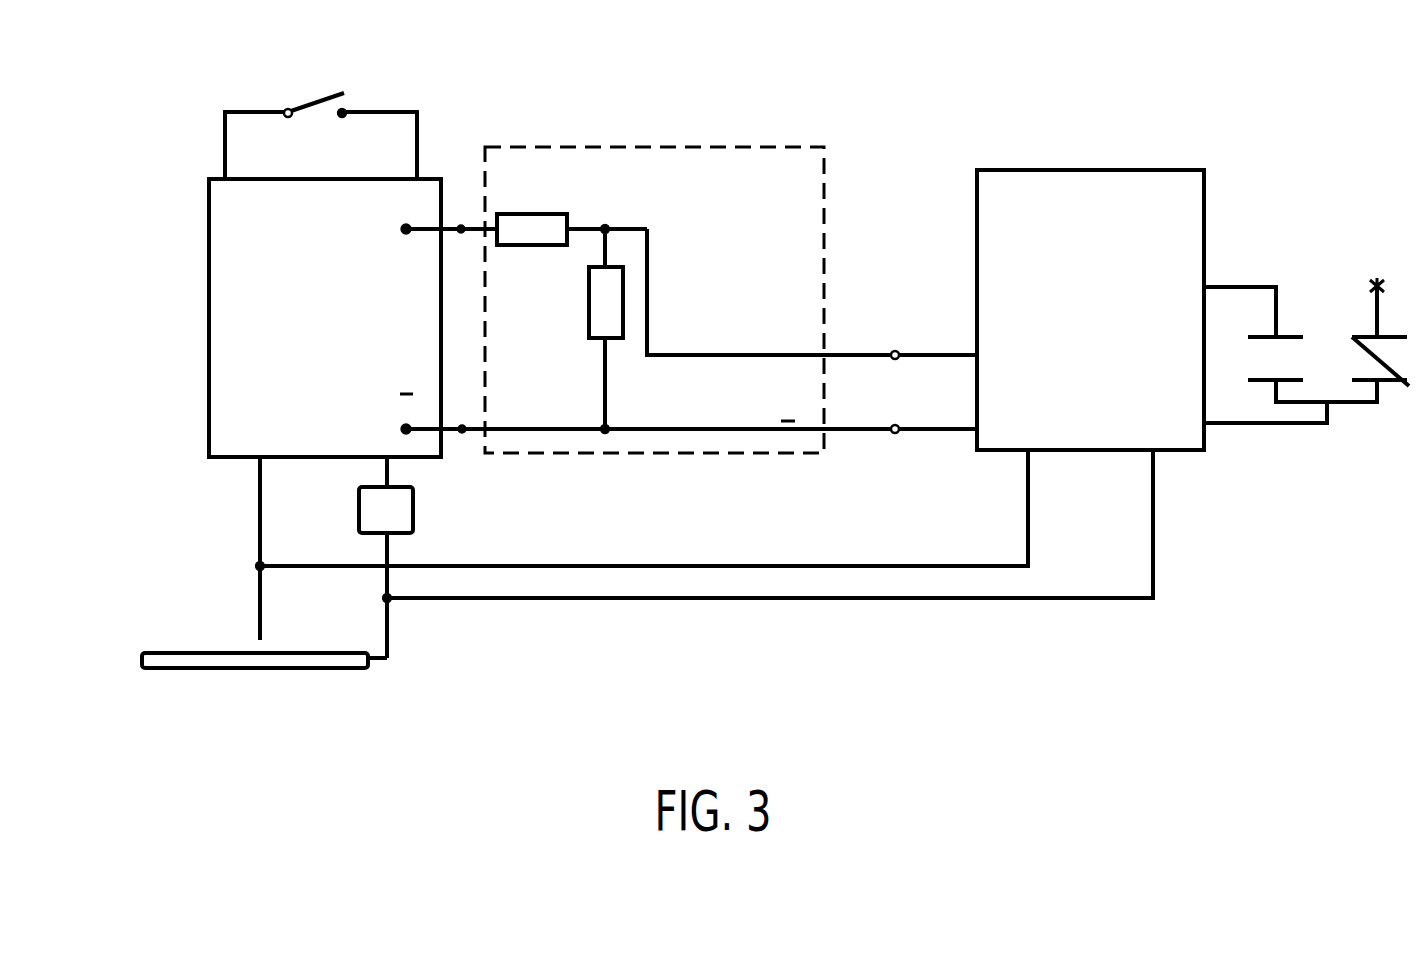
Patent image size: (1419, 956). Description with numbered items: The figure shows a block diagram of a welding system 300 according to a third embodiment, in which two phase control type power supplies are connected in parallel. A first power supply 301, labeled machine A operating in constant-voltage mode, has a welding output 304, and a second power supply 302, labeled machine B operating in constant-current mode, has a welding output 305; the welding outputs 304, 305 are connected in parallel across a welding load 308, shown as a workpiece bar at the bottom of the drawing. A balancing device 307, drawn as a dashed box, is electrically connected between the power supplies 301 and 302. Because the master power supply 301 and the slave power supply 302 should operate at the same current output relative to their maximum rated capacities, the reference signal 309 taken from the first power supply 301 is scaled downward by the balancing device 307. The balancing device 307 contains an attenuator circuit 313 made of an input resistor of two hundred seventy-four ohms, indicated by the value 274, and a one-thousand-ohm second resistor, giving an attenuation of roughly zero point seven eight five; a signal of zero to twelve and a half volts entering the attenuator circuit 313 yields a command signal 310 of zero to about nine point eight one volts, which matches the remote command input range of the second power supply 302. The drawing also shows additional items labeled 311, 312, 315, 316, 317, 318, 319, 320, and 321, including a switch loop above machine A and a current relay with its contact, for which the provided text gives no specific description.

The welding system 300 is at (1107, 632).
The first power supply 301 is at (209, 340).
The second power supply 302 is at (1152, 170).
The welding output 304 is at (320, 470).
The welding output 305 is at (1087, 480).
The balancing device 307 is at (780, 147).
The welding load 308 is at (263, 677).
The reference signal 309 is at (398, 378).
The command signal 310 is at (755, 373).
The positive output terminal of machine A 311 is at (458, 270).
The input lines to machine B 312 is at (907, 384).
The attenuator circuit 313 is at (629, 256).
The switch loop lead 315 is at (417, 125).
The relay contact return lead 316 is at (1262, 423).
The switch loop lead 317 is at (225, 150).
The relay coil lead 318 is at (1240, 287).
The switch 319 is at (315, 57).
The current relay CR1 320 is at (359, 512).
The relay contact 321 is at (1331, 311).
The input resistor R5 resistance value 274 is at (532, 215).